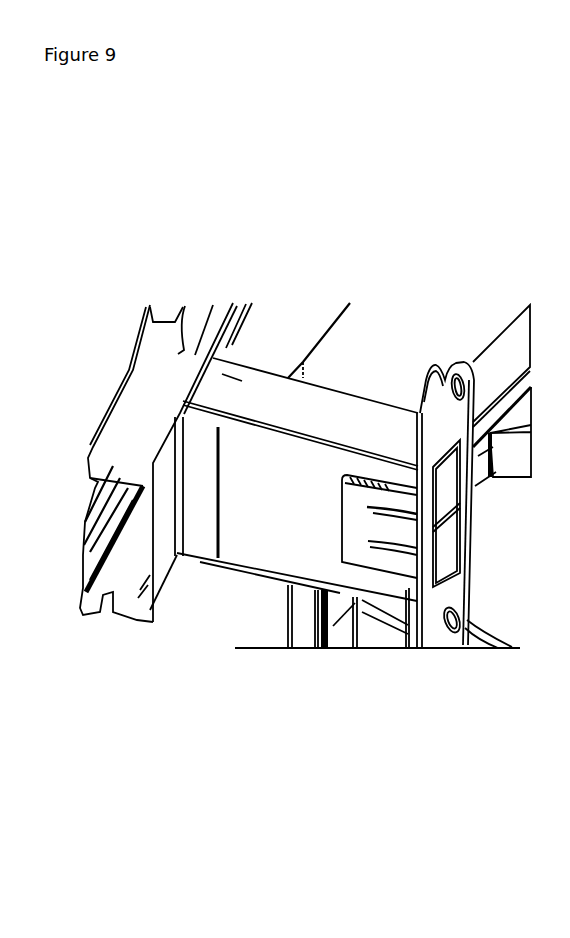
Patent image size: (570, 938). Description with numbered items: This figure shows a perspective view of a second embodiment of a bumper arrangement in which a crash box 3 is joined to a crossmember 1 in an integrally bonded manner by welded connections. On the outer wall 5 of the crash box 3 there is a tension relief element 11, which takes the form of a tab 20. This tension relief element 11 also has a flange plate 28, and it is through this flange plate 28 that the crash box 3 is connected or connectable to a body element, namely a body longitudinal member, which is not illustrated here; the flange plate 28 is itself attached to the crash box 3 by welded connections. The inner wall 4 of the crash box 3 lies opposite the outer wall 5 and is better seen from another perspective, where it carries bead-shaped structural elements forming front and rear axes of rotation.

The crossmember 1 is at (148, 392).
The crash box 3 is at (345, 407).
The inner wall 4 is at (372, 397).
The outer wall 5 is at (300, 532).
The tension relief element 11 is at (368, 527).
The tab 20 is at (367, 653).
The flange plate 28 is at (435, 415).